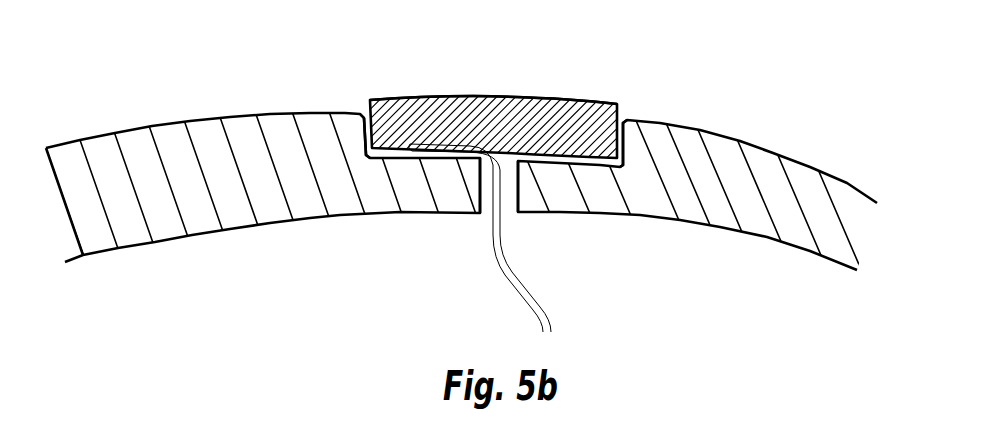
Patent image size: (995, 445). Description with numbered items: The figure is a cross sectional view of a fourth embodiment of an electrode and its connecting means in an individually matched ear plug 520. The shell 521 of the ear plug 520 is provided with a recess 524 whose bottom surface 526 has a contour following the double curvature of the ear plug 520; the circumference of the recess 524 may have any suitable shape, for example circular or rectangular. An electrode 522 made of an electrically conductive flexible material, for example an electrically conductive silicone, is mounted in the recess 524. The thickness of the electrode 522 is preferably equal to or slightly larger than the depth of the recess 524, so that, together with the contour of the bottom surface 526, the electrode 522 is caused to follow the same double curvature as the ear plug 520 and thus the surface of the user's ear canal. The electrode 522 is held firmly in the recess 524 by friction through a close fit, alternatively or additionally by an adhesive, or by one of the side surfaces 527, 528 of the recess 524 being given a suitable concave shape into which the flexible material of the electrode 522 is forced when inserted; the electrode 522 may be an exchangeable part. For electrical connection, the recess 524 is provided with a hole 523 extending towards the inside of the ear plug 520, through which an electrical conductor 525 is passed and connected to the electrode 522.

The ear plug 520 is at (453, 175).
The shell 521 is at (213, 152).
The electrode 522 is at (500, 92).
The hole 523 is at (505, 152).
The recess 524 is at (580, 97).
The electrical conductor 525 is at (543, 293).
The bottom surface 526 is at (452, 162).
The side surface 527 is at (362, 146).
The side surface 528 is at (625, 153).